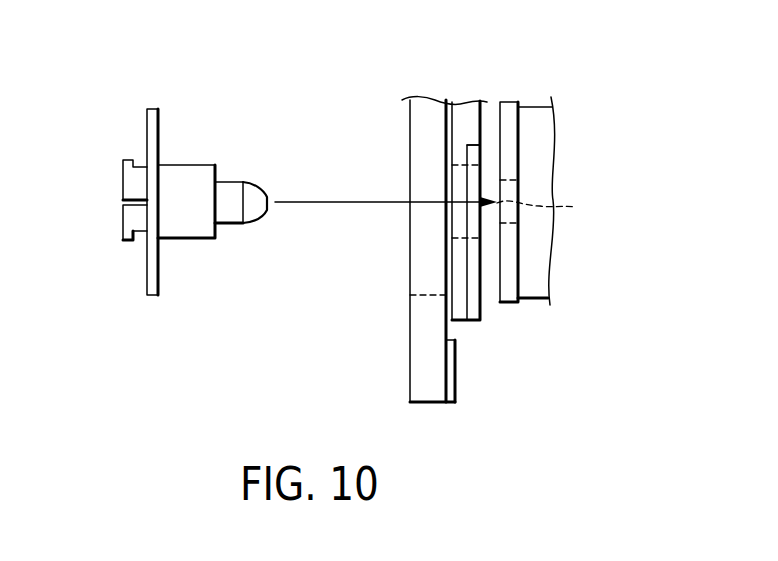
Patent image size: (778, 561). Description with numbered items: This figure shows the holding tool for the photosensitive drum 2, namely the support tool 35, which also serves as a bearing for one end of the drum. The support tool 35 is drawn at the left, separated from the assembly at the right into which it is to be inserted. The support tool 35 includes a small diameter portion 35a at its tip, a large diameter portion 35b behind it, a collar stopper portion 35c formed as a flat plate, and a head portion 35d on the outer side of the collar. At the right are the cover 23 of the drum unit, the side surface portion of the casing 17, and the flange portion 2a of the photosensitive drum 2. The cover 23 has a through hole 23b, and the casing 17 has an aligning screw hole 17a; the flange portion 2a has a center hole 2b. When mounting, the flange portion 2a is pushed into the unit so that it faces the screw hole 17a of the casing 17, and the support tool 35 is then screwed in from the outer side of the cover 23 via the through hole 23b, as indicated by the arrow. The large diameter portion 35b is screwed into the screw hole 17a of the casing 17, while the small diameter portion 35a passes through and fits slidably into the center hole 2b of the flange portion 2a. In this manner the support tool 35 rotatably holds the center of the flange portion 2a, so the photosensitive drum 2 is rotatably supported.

The support tool 35 is at (170, 185).
The small diameter portion 35a is at (238, 183).
The large diameter portion 35b is at (190, 233).
The collar stopper portion 35c is at (147, 120).
The head portion 35d is at (130, 220).
The cover 23 is at (411, 249).
The through hole 23b is at (420, 240).
The casing 17 is at (490, 191).
The screw hole 17a is at (460, 177).
The photosensitive drum 2 is at (550, 182).
The flange portion 2a is at (505, 102).
The center hole 2b is at (550, 210).